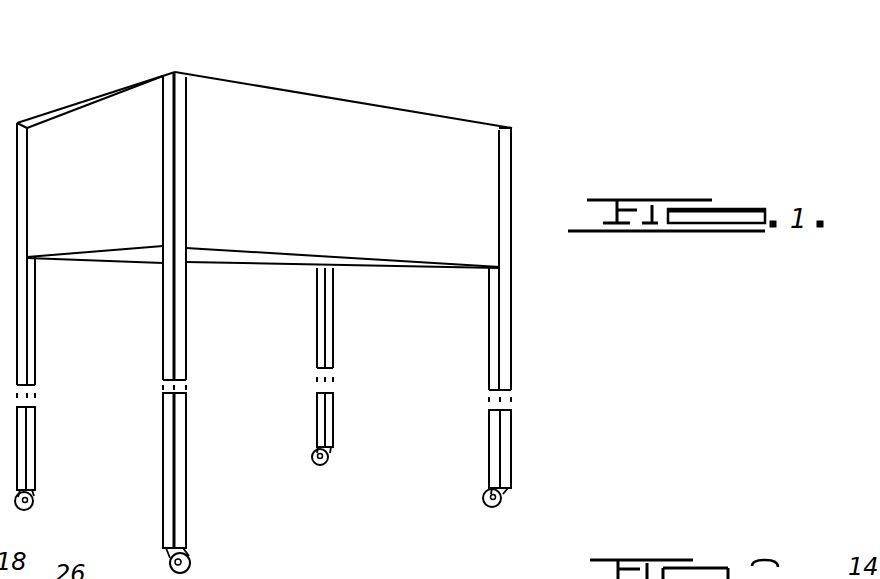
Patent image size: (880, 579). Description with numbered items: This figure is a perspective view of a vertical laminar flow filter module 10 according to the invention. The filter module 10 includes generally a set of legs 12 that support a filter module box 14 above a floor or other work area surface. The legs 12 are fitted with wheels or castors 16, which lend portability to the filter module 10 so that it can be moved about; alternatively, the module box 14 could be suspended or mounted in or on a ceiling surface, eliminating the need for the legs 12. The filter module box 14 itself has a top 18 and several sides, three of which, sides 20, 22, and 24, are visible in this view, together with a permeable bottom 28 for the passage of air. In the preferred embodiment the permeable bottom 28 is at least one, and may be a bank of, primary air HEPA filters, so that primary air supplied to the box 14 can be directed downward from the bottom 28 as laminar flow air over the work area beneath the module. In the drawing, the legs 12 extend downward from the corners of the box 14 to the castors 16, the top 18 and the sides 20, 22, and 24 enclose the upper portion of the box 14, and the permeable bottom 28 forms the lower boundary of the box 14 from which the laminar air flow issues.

The vertical laminar flow filter module 10 is at (347, 82).
The legs 12 is at (35, 318).
The filter module box 14 is at (400, 148).
The wheels or castors 16 is at (33, 503).
The top 18 is at (231, 80).
The side 20 is at (116, 190).
The side 22 is at (327, 190).
The side 24 is at (518, 208).
The permeable bottom 28 is at (250, 262).